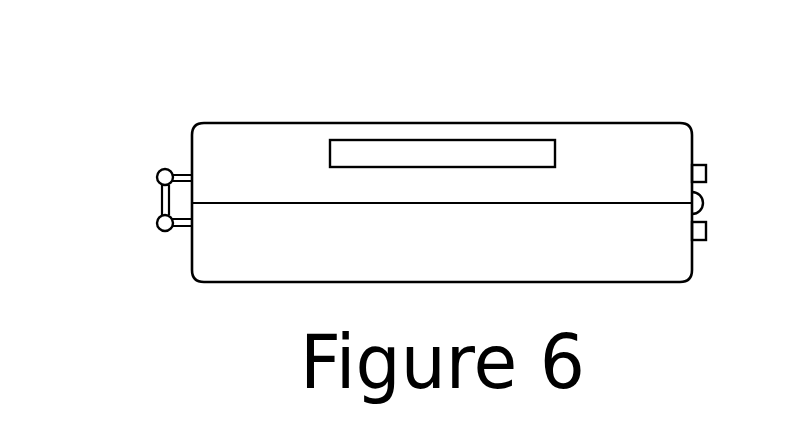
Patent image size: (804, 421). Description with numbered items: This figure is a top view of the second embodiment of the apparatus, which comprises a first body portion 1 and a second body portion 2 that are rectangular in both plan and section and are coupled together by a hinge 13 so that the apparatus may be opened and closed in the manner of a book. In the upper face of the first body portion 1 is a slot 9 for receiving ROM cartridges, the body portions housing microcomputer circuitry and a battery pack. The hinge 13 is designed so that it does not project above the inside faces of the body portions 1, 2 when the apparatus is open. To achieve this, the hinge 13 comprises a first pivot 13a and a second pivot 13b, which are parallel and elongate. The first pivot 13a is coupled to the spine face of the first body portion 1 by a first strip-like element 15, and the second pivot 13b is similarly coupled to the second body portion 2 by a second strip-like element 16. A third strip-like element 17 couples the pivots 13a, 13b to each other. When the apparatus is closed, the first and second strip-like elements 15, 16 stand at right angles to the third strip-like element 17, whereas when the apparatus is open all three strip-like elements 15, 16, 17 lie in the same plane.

The first body portion 1 is at (668, 162).
The second body portion 2 is at (667, 243).
The slot 9 is at (410, 157).
The hinge 13 is at (96, 220).
The first pivot 13a is at (160, 172).
The second pivot 13b is at (158, 226).
The first strip-like element 15 is at (175, 171).
The second strip-like element 16 is at (180, 228).
The third strip-like element 17 is at (162, 202).